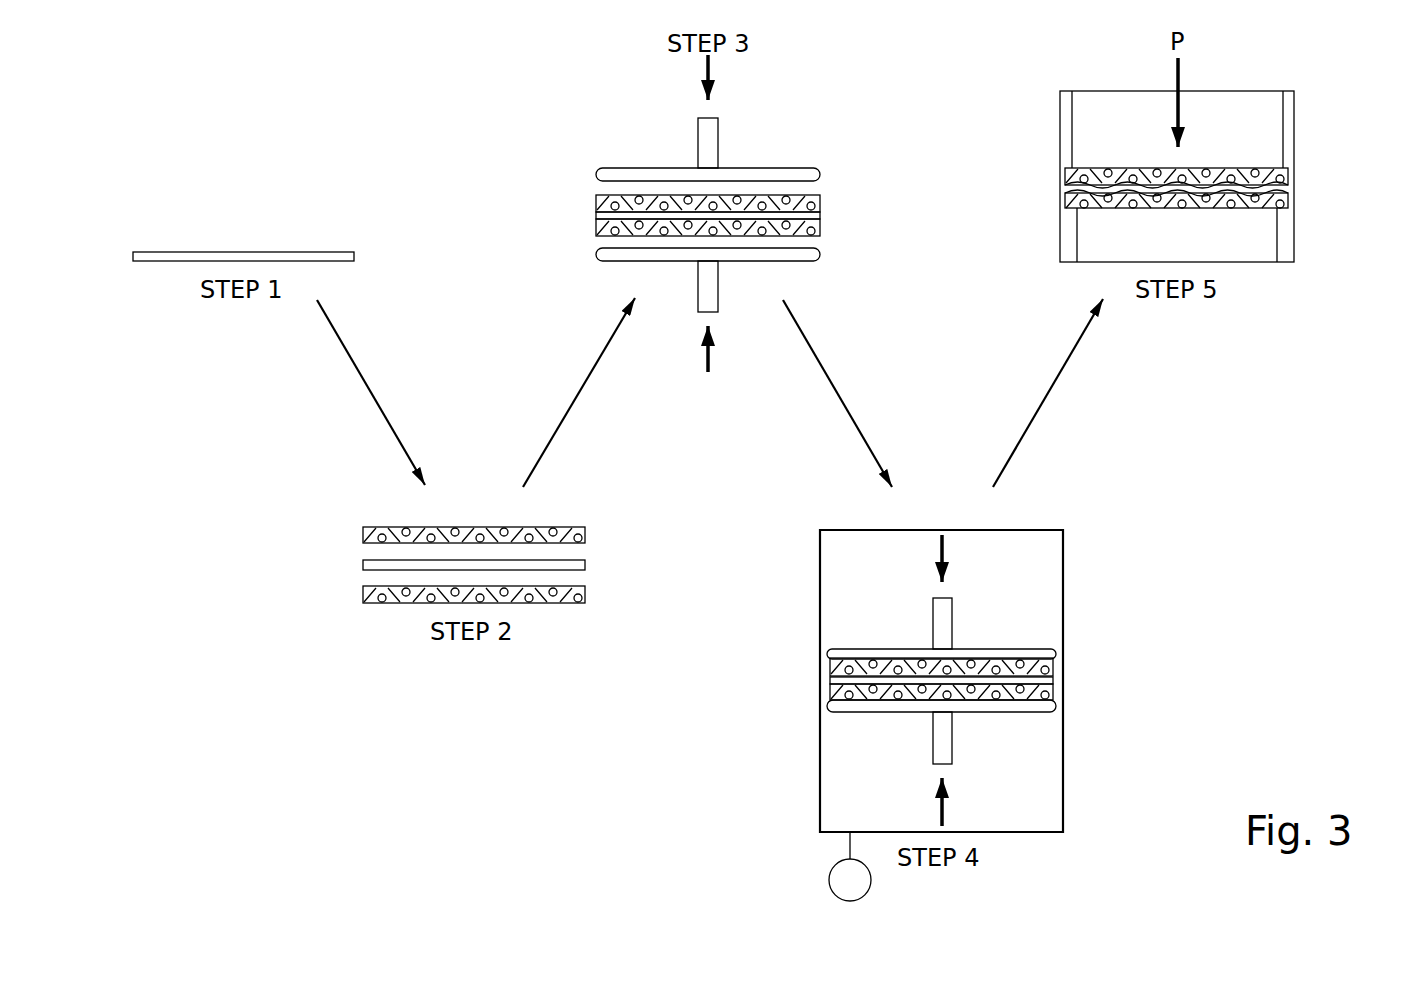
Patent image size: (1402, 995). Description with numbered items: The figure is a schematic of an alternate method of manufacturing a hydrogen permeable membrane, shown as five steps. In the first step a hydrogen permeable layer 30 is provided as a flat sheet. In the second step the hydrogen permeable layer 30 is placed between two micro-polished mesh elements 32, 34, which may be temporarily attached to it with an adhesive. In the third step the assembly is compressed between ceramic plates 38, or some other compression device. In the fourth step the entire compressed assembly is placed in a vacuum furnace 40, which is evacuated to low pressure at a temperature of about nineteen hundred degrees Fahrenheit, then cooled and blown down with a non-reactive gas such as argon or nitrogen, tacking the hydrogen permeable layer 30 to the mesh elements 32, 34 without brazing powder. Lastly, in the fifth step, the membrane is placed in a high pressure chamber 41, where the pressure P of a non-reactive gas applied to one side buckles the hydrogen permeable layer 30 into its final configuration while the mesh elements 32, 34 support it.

The hydrogen permeable layer 30 is at (191, 251).
The micro-polished mesh element 32 is at (500, 526).
The micro-polished mesh element 34 is at (548, 604).
The ceramic plates 38 is at (805, 168).
The vacuum furnace 40 is at (1043, 833).
The high pressure chamber 41 is at (1294, 127).